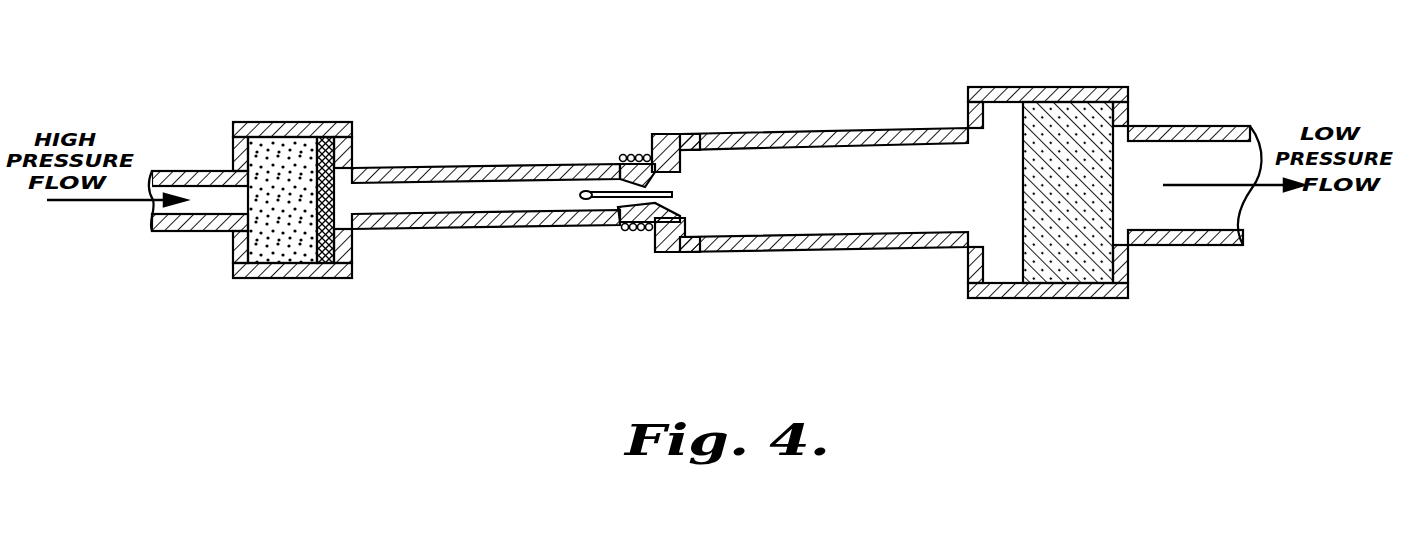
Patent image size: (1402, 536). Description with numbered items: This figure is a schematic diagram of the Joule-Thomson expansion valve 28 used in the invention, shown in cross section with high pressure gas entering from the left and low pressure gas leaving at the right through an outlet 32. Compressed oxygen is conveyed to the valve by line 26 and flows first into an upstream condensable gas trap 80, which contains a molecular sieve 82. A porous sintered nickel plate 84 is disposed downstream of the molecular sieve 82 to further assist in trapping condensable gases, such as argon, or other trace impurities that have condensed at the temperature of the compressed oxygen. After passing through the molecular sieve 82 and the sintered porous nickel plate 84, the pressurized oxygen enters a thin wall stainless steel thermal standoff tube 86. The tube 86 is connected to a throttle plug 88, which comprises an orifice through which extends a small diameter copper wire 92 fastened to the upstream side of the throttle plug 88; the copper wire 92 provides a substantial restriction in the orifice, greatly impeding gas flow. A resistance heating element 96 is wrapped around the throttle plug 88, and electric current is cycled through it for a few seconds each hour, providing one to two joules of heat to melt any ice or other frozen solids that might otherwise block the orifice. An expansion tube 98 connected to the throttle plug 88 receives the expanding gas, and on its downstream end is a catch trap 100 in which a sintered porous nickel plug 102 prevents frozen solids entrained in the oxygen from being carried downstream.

The line 26 is at (205, 172).
The Joule-Thomson expansion valve 28 is at (631, 245).
The low pressure outlet conduit 32 is at (1228, 126).
The upstream condensable gas trap 80 is at (275, 279).
The molecular sieve 82 is at (287, 150).
The porous sintered nickel plate 84 is at (334, 248).
The thin wall stainless steel thermal standoff tube 86 is at (446, 168).
The throttle plug 88 is at (672, 252).
The small diameter copper wire 92 is at (590, 212).
The resistance heating element 96 is at (635, 156).
The expansion tube 98 is at (858, 130).
The catch trap 100 is at (968, 108).
The sintered porous nickel plug 102 is at (1065, 100).